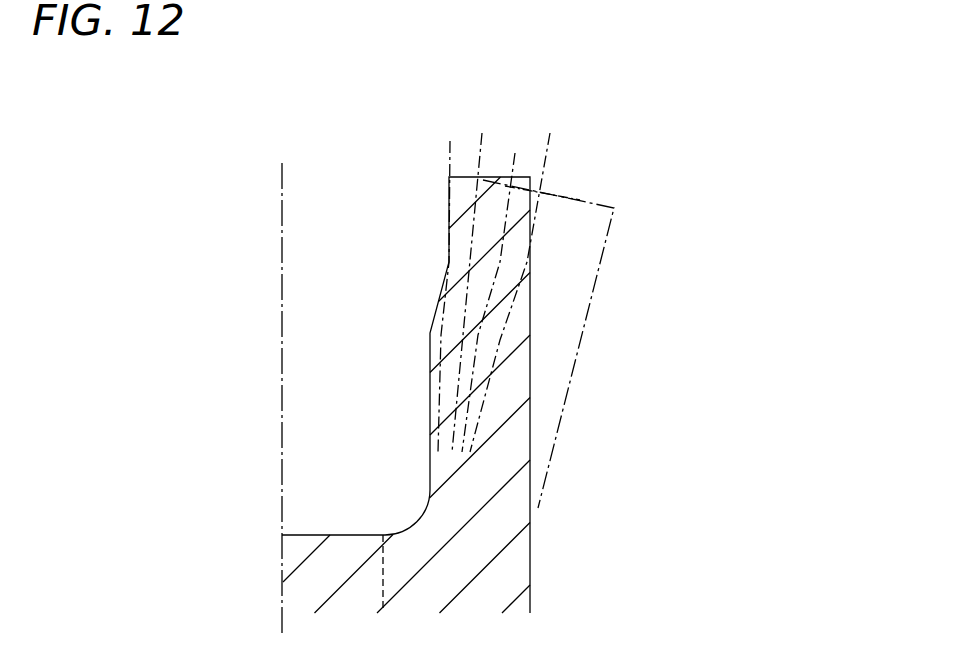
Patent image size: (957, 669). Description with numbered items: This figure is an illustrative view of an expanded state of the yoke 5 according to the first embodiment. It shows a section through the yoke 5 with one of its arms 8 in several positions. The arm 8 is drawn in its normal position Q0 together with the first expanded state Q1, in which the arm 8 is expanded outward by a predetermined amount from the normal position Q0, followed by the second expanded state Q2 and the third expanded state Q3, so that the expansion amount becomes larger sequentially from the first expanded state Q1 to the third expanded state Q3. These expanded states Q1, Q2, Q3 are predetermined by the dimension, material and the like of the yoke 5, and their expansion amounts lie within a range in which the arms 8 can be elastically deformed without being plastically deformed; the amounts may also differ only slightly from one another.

The yoke 5 is at (537, 543).
The arm 8 is at (505, 333).
The normal position Q0 is at (449, 286).
The first expanded state Q1 is at (475, 281).
The second expanded state Q2 is at (496, 291).
The third expanded state Q3 is at (519, 281).